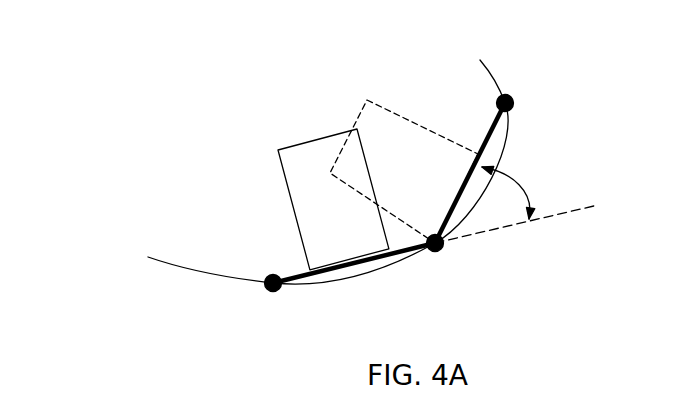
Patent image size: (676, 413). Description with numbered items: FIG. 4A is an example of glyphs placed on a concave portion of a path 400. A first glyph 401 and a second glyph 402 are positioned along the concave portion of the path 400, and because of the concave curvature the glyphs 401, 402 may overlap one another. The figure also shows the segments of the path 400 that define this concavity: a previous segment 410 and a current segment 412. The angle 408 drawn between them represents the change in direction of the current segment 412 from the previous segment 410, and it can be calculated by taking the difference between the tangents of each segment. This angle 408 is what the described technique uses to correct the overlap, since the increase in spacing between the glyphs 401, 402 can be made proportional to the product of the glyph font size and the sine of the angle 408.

The path 400 is at (147, 263).
The first glyph 401 is at (277, 153).
The second glyph 402 is at (374, 95).
The angle 408 is at (515, 178).
The previous segment 410 is at (350, 265).
The current segment 412 is at (500, 120).